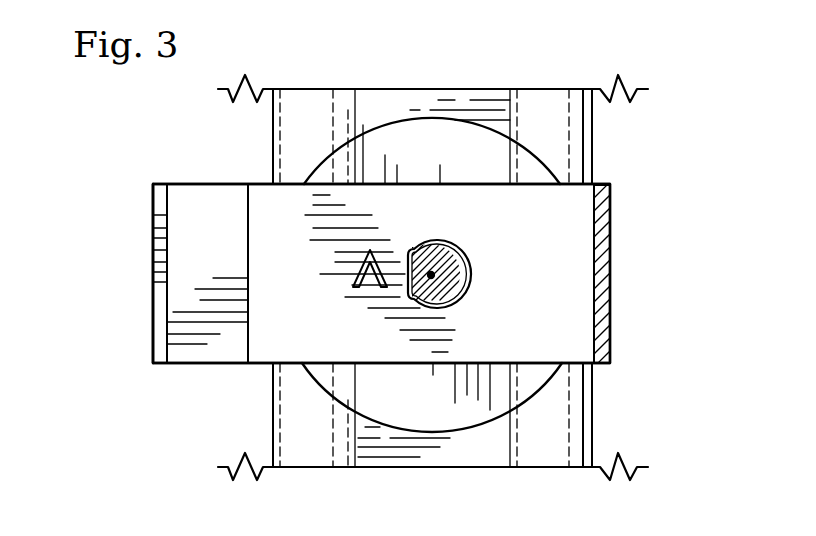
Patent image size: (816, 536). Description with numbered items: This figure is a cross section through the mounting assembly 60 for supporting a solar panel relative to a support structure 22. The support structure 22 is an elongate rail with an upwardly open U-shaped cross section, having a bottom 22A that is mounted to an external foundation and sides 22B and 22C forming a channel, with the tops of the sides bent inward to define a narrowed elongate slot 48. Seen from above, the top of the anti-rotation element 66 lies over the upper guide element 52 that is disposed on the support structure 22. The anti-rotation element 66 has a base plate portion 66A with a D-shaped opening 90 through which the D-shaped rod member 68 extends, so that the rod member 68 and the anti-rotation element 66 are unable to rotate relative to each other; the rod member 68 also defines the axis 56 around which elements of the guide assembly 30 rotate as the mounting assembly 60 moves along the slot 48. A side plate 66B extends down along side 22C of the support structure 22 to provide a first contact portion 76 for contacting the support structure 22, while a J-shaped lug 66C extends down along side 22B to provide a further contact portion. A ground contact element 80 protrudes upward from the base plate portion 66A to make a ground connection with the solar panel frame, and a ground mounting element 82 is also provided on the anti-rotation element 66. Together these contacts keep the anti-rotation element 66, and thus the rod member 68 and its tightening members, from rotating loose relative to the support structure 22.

The support structure 22 is at (550, 472).
The bottom 22A is at (478, 458).
The side 22B is at (272, 405).
The side 22C is at (593, 415).
The guide assembly 30 is at (379, 121).
The slot 48 is at (404, 470).
The upper guide element 52 is at (478, 121).
The axis 56 is at (428, 262).
The mounting assembly 60 is at (105, 177).
The anti-rotation element 66 is at (616, 277).
The base plate portion 66A is at (267, 200).
The side plate 66B is at (613, 222).
The J-shaped lug 66C is at (153, 292).
The D-shaped rod member 68 is at (450, 247).
The first contact portion 76 is at (596, 181).
The ground contact element 80 is at (368, 282).
The ground mounting element 82 is at (151, 346).
The D-shaped opening 90 is at (447, 291).